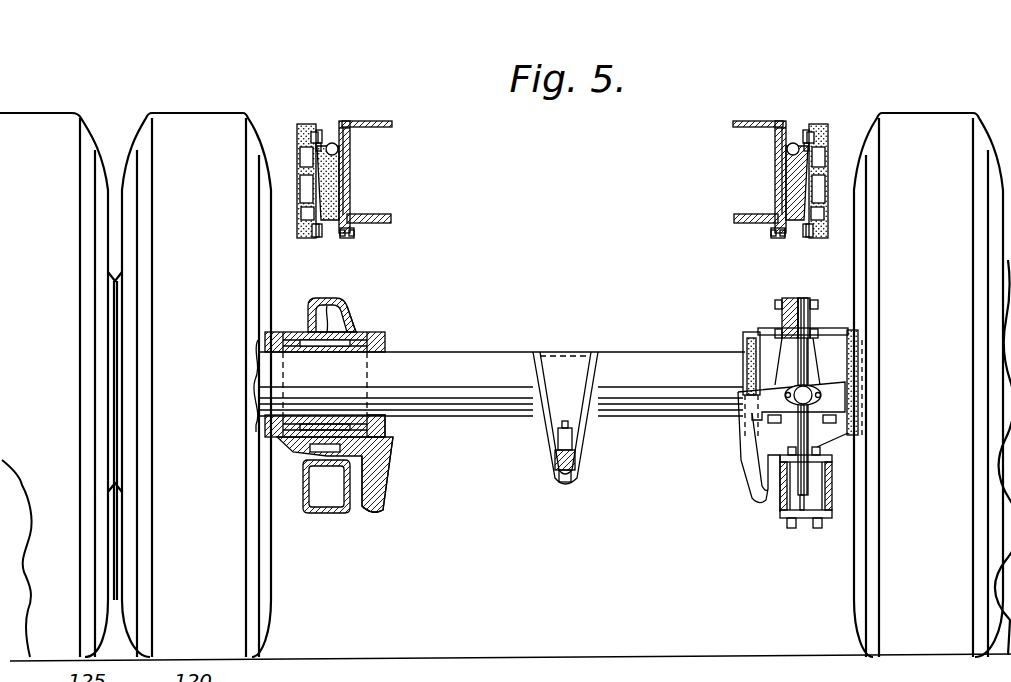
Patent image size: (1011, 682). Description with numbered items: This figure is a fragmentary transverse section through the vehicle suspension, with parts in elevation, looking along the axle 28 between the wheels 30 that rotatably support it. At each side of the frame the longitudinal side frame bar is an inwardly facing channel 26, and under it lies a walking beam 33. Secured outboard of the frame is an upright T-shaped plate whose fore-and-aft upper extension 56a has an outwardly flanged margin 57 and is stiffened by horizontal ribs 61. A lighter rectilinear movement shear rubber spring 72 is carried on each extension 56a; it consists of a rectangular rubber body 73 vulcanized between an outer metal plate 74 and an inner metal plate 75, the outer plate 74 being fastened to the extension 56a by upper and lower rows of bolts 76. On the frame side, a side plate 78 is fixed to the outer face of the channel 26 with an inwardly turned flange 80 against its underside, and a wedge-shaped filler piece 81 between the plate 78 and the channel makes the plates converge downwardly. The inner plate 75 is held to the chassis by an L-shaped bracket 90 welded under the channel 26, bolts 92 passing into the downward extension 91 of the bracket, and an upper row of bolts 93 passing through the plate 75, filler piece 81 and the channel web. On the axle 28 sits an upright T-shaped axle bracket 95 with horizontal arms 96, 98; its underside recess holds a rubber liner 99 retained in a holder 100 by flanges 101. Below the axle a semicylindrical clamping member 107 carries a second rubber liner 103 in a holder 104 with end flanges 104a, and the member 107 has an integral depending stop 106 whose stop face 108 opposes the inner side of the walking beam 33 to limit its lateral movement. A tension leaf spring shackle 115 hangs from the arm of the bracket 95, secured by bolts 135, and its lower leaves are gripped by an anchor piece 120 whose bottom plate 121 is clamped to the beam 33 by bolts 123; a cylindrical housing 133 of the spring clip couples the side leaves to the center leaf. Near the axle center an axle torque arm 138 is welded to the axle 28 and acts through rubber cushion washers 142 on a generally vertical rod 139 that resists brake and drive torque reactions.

The inwardly facing channel 26 is at (392, 122).
The front axle 28 is at (612, 355).
The wheel 30 is at (143, 135).
The walking beam 33 is at (292, 501).
The upper extension 56a is at (298, 187).
The marginal flange 57 is at (303, 132).
The horizontal rib 61 is at (300, 147).
The lighter rectilinear movement shear rubber spring 72 is at (325, 97).
The rectangular rubber body 73 is at (333, 175).
The outer metal plate 74 is at (318, 140).
The inner metal plate 75 is at (334, 140).
The bolt 76 is at (300, 127).
The side plate 78 is at (348, 130).
The flange 80 is at (380, 218).
The wedge-shaped filler piece 81 is at (351, 126).
The L-shaped bracket 90 is at (358, 226).
The downward extension 91 is at (350, 238).
The bolt 92 is at (356, 237).
The bolt 93 is at (348, 148).
The axle bracket 95 is at (290, 302).
The arm 96 is at (796, 298).
The arm 98 is at (352, 332).
The rubber liner 99 is at (333, 300).
The holder 100 is at (294, 353).
The flange 101 is at (266, 338).
The rubber liner 103 is at (267, 427).
The holder 104 is at (343, 416).
The end flange 104a is at (386, 437).
The stop 106 is at (386, 506).
The clamping member 107 is at (298, 448).
The stop face 108 is at (357, 511).
The tension leaf spring shackle 115 is at (784, 352).
The anchor piece 120 is at (818, 504).
The bottom plate 121 is at (803, 519).
The bolt 123 is at (790, 529).
The cylindrical housing 133 is at (823, 402).
The bolt 135 is at (777, 303).
The axle torque arm 138 is at (578, 455).
The rod 139 is at (578, 428).
The rubber cushion washer 142 is at (557, 468).